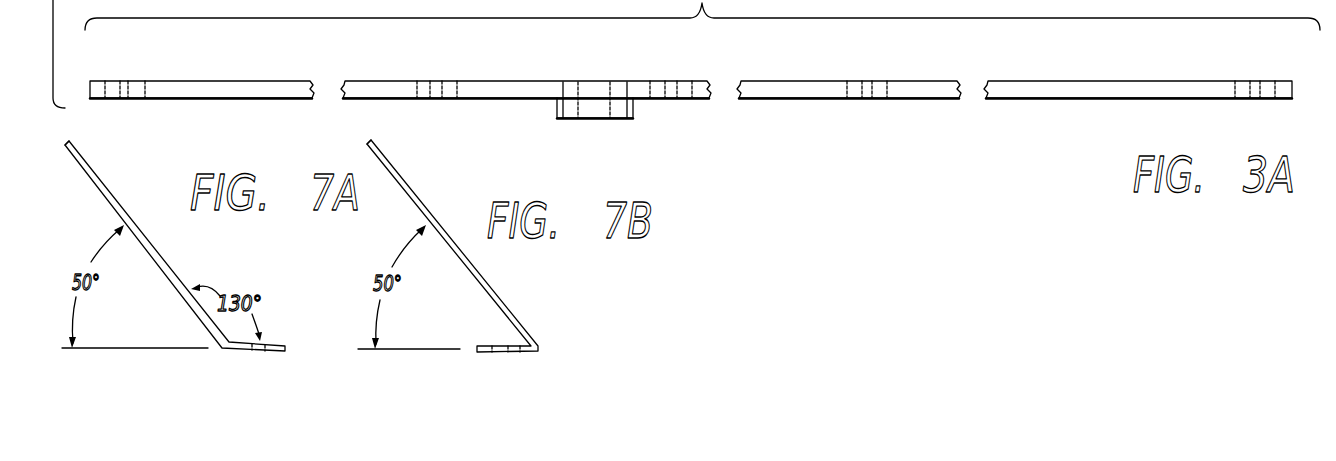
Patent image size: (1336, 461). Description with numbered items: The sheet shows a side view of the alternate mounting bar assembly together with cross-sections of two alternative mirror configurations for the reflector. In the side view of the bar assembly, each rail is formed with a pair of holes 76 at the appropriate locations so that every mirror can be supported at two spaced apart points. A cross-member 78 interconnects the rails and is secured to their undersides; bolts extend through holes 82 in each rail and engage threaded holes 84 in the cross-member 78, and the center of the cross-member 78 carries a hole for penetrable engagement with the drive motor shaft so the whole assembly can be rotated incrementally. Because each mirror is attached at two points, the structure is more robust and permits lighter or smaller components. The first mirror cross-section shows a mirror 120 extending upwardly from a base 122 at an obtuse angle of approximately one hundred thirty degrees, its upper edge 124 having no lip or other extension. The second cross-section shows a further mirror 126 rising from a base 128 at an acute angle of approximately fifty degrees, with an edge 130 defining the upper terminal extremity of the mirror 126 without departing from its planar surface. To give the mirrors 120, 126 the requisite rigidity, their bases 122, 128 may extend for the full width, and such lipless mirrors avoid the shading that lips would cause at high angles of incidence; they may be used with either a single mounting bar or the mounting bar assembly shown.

In FIG. 3A, the holes 76 is at (93, 81).
In FIG. 3A, the cross-member 78 is at (554, 108).
In FIG. 3A, the holes 82 is at (560, 87).
In FIG. 3A, the threaded holes 84 is at (578, 110).
In FIG. 7A, the mirror 120 is at (120, 190).
In FIG. 7A, the base 122 is at (279, 343).
In FIG. 7A, the upper edge 124 is at (65, 142).
In FIG. 7B, the mirror 126 is at (510, 310).
In FIG. 7B, the base 128 is at (480, 345).
In FIG. 7B, the edge 130 is at (369, 142).